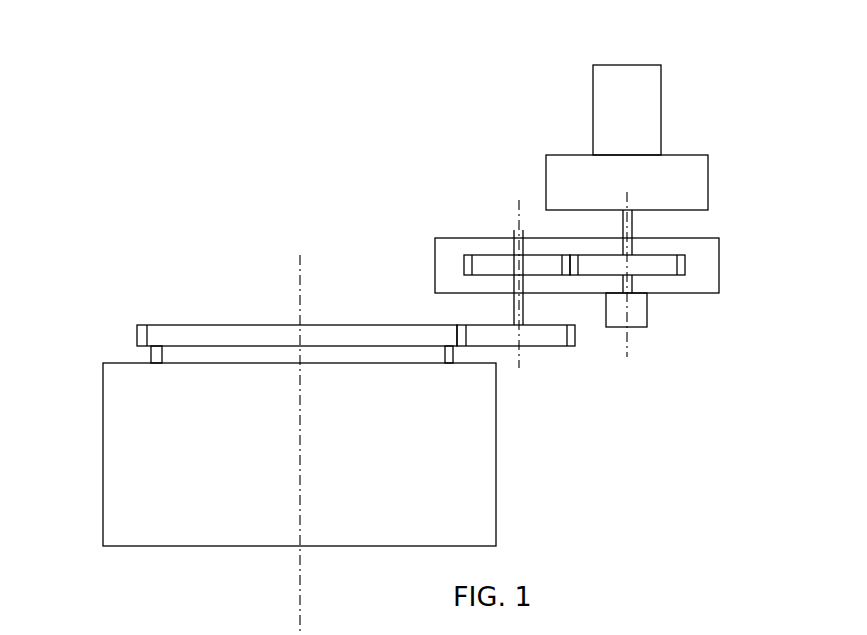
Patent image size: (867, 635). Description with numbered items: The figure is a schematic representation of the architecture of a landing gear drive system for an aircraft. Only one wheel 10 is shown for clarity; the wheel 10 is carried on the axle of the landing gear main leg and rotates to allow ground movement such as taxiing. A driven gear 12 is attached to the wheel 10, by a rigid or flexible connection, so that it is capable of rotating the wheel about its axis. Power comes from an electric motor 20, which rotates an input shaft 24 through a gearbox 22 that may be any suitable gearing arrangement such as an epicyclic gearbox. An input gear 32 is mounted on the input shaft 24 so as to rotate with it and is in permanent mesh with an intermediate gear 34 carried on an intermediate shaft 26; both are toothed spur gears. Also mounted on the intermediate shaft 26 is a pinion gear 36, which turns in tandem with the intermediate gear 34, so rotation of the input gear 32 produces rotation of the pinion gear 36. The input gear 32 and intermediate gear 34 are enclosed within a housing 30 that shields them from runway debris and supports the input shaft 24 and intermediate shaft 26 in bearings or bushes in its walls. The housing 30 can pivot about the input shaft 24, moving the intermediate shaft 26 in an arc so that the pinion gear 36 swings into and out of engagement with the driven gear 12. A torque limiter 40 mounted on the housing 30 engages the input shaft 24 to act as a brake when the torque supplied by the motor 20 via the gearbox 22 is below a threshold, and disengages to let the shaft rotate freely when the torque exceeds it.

The wheel 10 is at (103, 443).
The driven gear 12 is at (180, 325).
The electric motor 20 is at (661, 104).
The gearbox 22 is at (708, 181).
The input shaft 24 is at (632, 224).
The intermediate shaft 26 is at (523, 305).
The housing 30 is at (719, 269).
The input gear 32 is at (660, 276).
The intermediate gear 34 is at (490, 253).
The pinion gear 36 is at (537, 347).
The torque limiter 40 is at (647, 313).